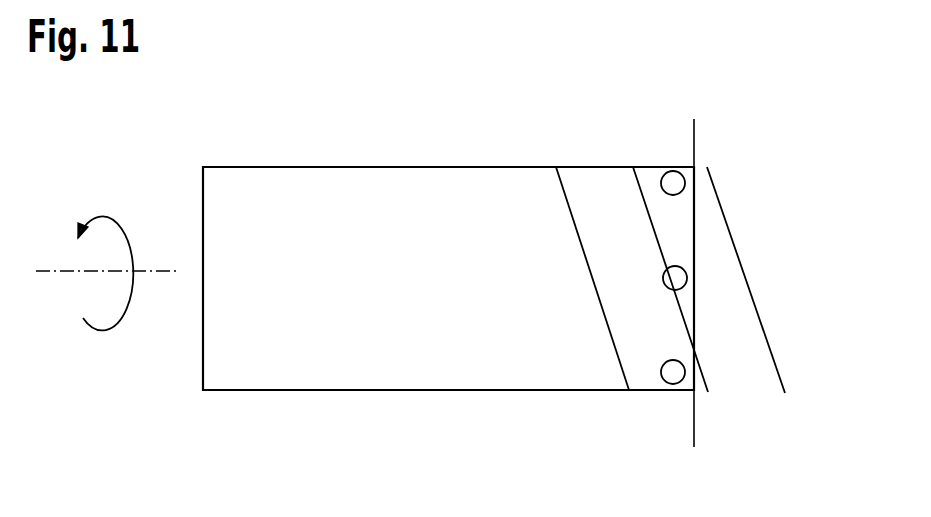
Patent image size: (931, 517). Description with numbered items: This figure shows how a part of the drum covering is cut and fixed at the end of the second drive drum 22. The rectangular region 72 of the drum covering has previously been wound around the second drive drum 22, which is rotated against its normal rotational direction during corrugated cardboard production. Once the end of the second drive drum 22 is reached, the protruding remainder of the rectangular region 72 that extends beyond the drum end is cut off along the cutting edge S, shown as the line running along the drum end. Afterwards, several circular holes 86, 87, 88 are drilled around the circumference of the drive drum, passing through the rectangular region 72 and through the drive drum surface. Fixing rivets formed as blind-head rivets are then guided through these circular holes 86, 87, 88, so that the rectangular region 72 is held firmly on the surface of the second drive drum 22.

The second drive drum 22 is at (392, 182).
The circular hole 86 is at (673, 183).
The circular hole 87 is at (675, 278).
The circular hole 88 is at (673, 372).
The rectangular region 72 is at (738, 322).
The cutting edge S is at (694, 133).